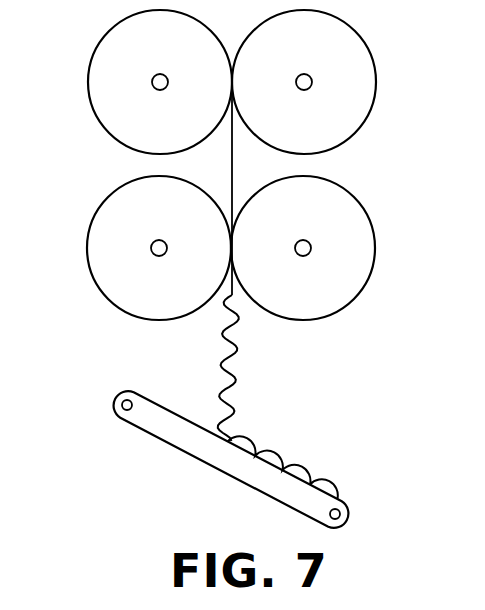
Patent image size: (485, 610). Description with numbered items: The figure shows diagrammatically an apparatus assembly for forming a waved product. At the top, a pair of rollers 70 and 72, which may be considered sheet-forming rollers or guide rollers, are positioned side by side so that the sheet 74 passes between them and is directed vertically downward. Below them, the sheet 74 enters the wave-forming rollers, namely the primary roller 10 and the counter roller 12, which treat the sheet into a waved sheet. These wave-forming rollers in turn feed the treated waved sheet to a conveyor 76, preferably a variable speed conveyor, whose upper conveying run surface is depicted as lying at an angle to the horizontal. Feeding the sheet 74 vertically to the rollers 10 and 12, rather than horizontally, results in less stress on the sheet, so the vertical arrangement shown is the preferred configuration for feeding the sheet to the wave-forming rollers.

The roller 70 is at (87, 68).
The roller 72 is at (373, 58).
The sheet 74 is at (232, 164).
The primary roller 10 is at (87, 262).
The counter roller 12 is at (372, 226).
The conveyor 76 is at (187, 455).